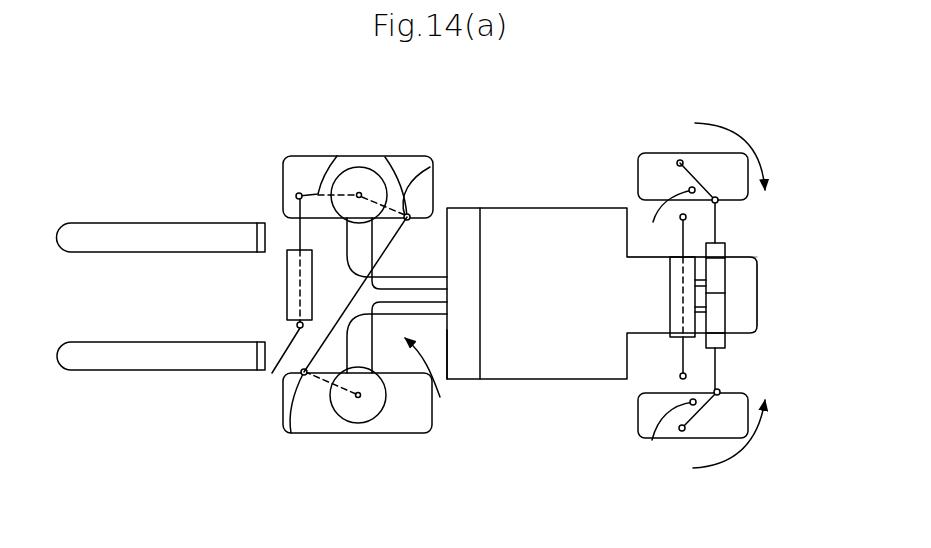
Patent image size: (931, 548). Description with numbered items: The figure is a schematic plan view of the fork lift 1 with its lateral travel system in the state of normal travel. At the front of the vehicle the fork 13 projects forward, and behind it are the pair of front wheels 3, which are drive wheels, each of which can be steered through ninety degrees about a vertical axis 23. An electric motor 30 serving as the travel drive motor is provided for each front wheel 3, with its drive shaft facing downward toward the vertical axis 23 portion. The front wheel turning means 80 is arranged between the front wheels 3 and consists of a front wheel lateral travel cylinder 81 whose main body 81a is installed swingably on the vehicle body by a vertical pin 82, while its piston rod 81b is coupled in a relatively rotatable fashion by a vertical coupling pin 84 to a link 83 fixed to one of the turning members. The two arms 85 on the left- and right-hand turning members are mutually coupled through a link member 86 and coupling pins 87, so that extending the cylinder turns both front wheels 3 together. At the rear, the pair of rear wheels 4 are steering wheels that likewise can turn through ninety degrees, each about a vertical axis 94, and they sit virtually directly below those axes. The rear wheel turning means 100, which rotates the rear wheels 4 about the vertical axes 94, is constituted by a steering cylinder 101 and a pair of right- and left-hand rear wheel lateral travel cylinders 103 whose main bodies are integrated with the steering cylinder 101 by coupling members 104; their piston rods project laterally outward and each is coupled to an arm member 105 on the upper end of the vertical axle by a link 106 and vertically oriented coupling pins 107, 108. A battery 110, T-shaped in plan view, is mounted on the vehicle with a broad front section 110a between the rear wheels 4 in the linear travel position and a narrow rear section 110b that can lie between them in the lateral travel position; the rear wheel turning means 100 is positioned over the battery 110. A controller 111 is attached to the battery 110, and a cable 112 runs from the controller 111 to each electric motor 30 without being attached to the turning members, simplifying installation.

The fork lift 1 is at (545, 128).
The front wheels 3 is at (300, 160).
The rear wheels 4 is at (643, 182).
The fork 13 is at (173, 347).
The vertical axis 23 is at (362, 194).
The electric motor 30 is at (353, 178).
The front wheel turning means 80 is at (277, 317).
The front wheel lateral travel cylinder 81 is at (285, 278).
The main body 81a is at (290, 290).
The piston rod 81b is at (296, 230).
The vertical pin 82 is at (271, 375).
The link 83 is at (336, 156).
The vertical coupling pin 84 is at (297, 193).
The arms 85 is at (430, 167).
The link member 86 is at (339, 327).
The coupling pins 87 is at (409, 255).
The vertical axis 94 is at (666, 329).
The rear wheel turning means 100 is at (744, 245).
The steering cylinder 101 is at (669, 305).
The rear wheel lateral travel cylinders 103 is at (732, 281).
The coupling members 104 is at (701, 318).
The arm member 105 is at (678, 161).
The link 106 is at (700, 155).
The coupling pin 107 is at (677, 160).
The coupling pin 108 is at (718, 202).
The battery 110 is at (545, 382).
The front section 110a is at (502, 374).
The rear section 110b is at (758, 317).
The controller 111 is at (470, 280).
The cable 112 is at (410, 254).